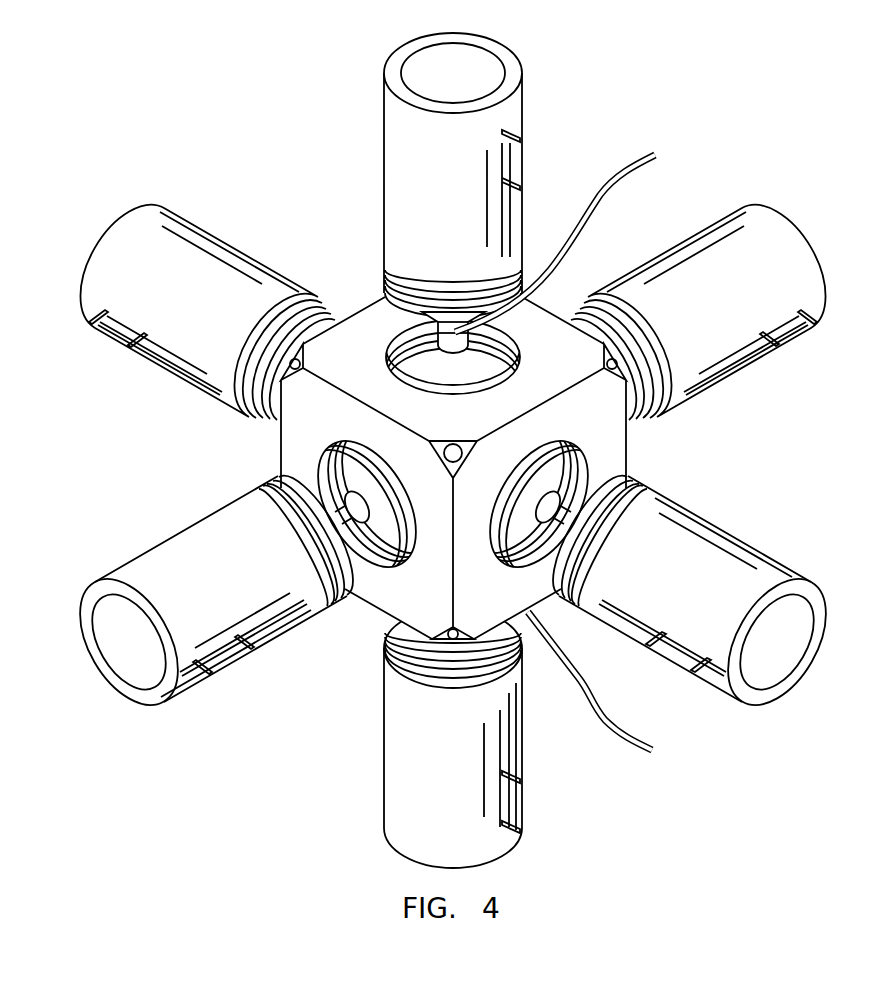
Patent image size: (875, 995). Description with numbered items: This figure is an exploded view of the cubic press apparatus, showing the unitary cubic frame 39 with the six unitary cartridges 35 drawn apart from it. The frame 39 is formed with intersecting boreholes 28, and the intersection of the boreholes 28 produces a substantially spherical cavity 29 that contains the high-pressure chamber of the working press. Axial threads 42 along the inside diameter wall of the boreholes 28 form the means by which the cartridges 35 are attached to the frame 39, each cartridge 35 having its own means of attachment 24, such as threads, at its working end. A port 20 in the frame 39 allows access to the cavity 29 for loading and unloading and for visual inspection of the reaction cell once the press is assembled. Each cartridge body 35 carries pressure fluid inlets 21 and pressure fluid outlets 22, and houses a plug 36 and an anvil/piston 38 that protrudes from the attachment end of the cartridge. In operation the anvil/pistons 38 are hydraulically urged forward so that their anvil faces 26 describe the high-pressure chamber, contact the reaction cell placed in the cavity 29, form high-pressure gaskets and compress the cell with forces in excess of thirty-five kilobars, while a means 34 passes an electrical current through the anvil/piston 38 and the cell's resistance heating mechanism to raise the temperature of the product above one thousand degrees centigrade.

The port 20 is at (620, 378).
The pressure fluid inlets 21 is at (690, 666).
The pressure fluid outlets 22 is at (518, 830).
The means of attachment 24 is at (627, 490).
The anvil faces 26 is at (440, 336).
The boreholes 28 is at (450, 347).
The cavity 29 is at (380, 490).
The means for passing an electrical current 34 is at (655, 155).
The cartridge 35 is at (683, 537).
The plug 36 is at (699, 595).
The anvil/piston 38 is at (382, 297).
The unitary cubic frame 39 is at (455, 468).
The axial threads 42 is at (514, 562).